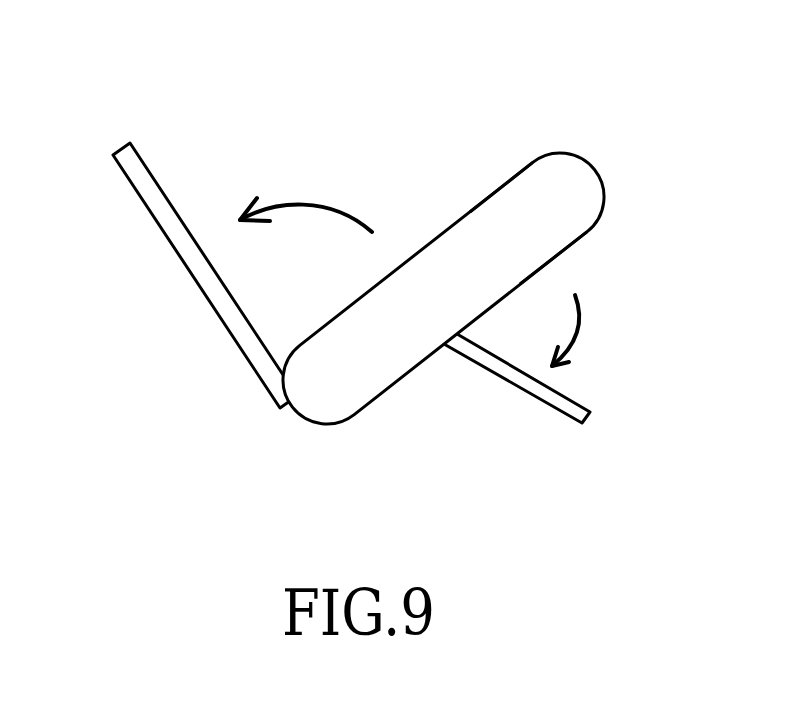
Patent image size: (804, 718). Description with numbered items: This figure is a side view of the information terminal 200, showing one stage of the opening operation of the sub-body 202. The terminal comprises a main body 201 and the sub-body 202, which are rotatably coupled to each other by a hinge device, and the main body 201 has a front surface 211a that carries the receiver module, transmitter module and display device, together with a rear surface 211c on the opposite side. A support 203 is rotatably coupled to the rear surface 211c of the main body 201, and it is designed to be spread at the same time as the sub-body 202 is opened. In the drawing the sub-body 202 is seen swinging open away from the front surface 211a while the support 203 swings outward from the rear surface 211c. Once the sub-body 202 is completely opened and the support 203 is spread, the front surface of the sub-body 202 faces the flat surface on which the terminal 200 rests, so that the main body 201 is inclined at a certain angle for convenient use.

The information terminal 200 is at (361, 54).
The main body 201 is at (486, 264).
The sub-body 202 is at (183, 242).
The support 203 is at (570, 407).
The front surface 211a is at (530, 161).
The rear surface 211c is at (567, 247).